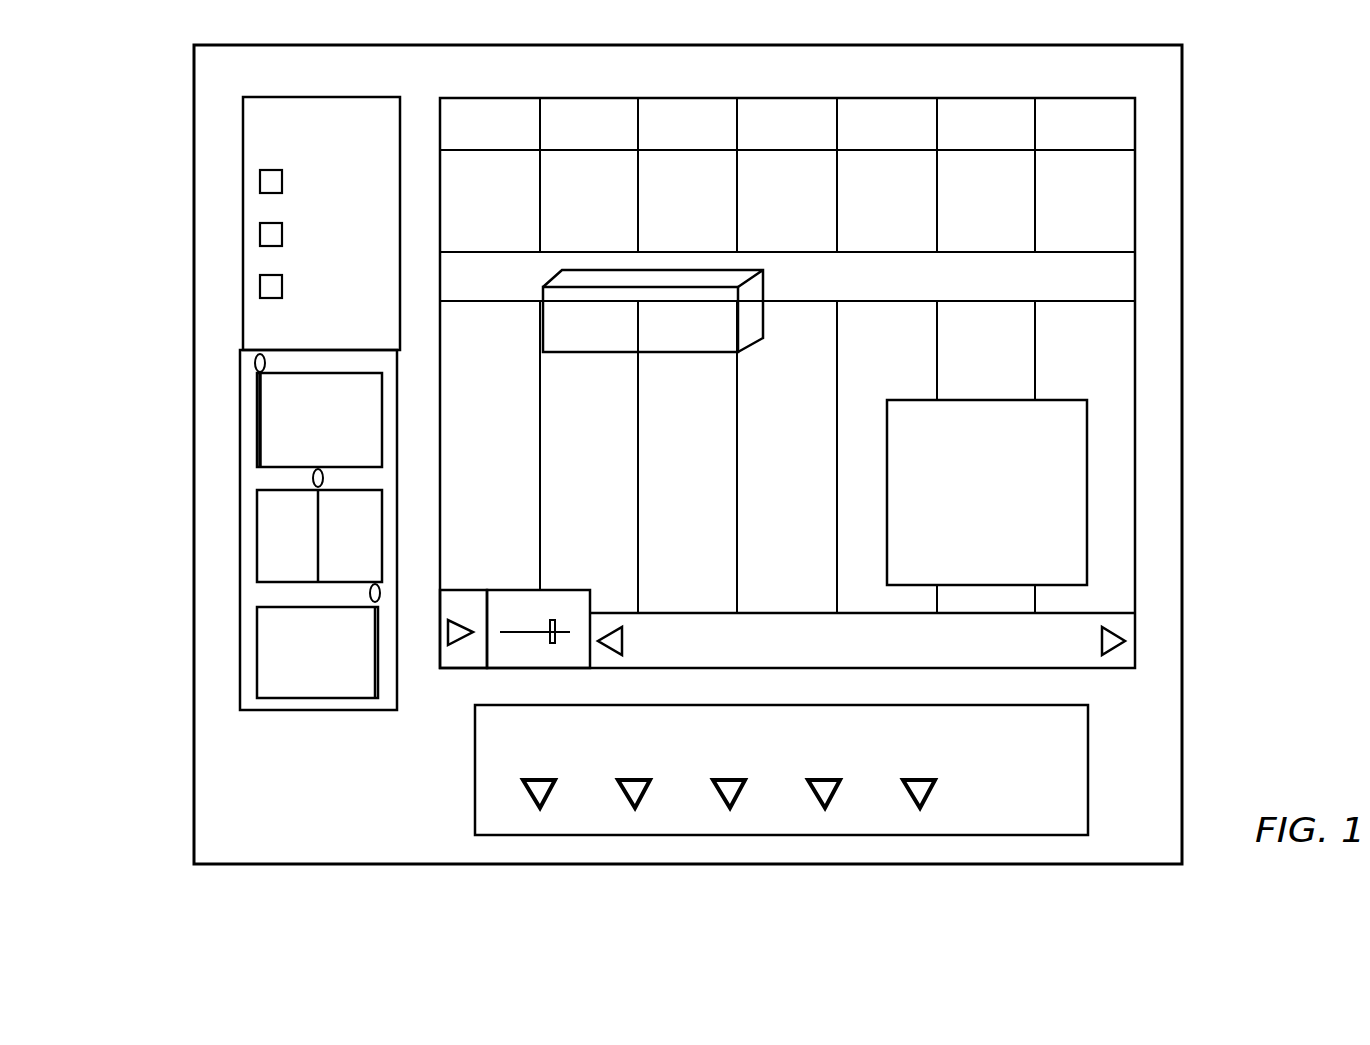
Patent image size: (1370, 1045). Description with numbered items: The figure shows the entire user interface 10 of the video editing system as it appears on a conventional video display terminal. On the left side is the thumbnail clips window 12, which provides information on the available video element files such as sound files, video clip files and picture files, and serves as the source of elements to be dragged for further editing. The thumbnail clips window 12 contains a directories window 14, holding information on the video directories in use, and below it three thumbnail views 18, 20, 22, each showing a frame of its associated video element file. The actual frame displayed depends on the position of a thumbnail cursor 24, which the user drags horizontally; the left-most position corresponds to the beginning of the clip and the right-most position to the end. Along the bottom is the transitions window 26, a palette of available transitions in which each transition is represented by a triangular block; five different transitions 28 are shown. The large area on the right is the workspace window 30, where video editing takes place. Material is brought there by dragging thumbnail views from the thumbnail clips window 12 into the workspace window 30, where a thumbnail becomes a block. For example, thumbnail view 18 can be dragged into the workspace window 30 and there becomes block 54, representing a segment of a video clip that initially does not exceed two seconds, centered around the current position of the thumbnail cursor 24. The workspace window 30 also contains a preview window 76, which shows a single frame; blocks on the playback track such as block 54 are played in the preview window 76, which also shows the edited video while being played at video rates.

The user interface 10 is at (1197, 206).
The thumbnail clips window 12 is at (311, 711).
The directories window 14 is at (288, 110).
The thumbnail view 18 is at (257, 428).
The thumbnail view 20 is at (257, 548).
The thumbnail view 22 is at (257, 673).
The thumbnail cursor 24 is at (253, 363).
The transitions window 26 is at (892, 827).
The transitions 28 is at (548, 793).
The workspace window 30 is at (1140, 523).
The block 54 is at (600, 355).
The preview window 76 is at (1088, 435).